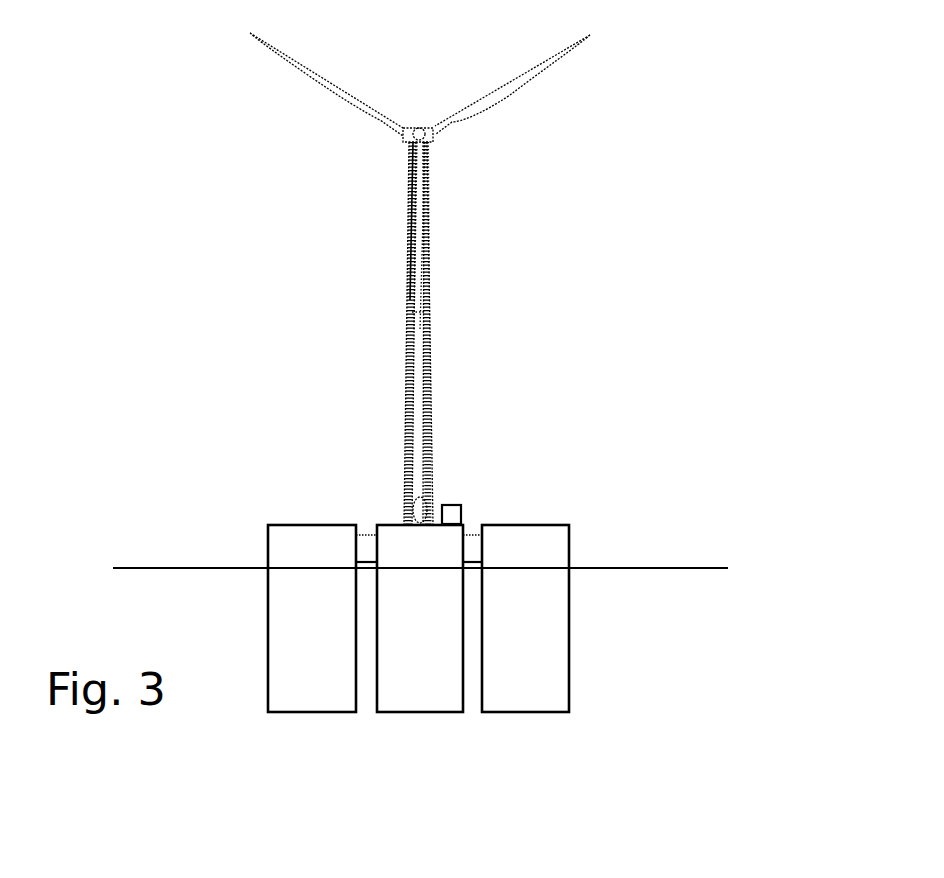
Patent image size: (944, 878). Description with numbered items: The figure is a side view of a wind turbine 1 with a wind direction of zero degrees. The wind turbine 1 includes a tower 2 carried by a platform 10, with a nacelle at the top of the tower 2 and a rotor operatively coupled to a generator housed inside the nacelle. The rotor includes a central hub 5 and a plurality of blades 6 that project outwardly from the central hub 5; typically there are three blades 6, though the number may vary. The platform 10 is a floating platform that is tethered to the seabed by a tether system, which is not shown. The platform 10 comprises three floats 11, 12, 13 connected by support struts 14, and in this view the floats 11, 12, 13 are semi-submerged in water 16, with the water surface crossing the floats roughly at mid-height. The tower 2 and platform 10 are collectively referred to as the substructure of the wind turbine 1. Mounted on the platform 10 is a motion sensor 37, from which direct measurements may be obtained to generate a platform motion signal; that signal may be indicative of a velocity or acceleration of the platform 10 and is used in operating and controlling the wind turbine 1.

The wind turbine 1 is at (650, 152).
The tower 2 is at (408, 378).
The central hub 5 is at (420, 135).
The blades 6 is at (472, 95).
The platform 10 is at (265, 507).
The float 11 is at (397, 548).
The float 12 is at (296, 550).
The float 13 is at (524, 542).
The support struts 14 is at (472, 548).
The water 16 is at (621, 566).
The motion sensors 37 is at (452, 517).